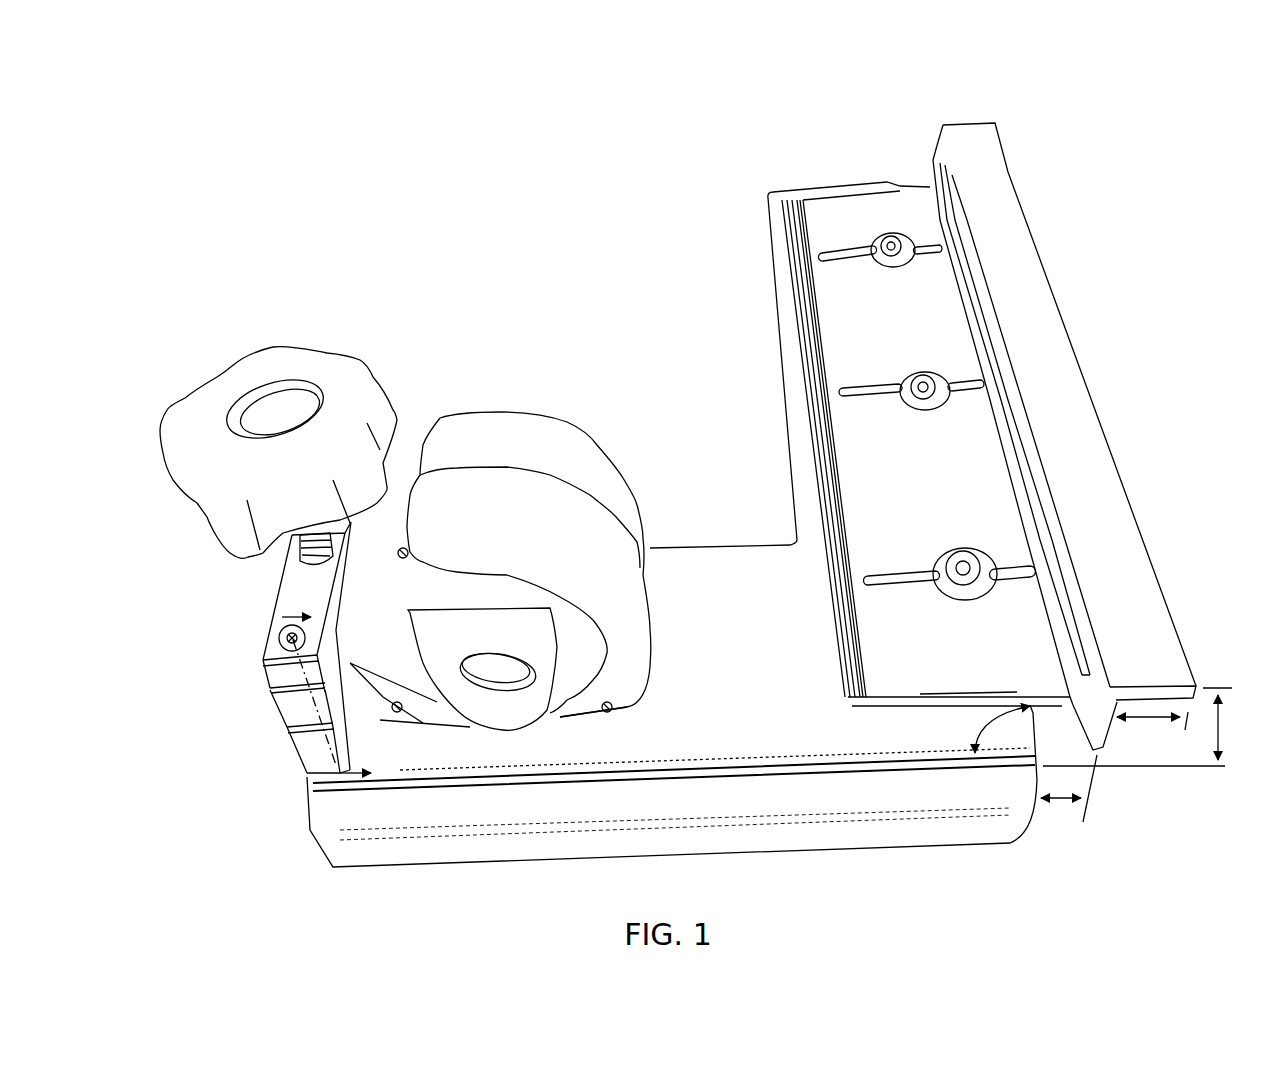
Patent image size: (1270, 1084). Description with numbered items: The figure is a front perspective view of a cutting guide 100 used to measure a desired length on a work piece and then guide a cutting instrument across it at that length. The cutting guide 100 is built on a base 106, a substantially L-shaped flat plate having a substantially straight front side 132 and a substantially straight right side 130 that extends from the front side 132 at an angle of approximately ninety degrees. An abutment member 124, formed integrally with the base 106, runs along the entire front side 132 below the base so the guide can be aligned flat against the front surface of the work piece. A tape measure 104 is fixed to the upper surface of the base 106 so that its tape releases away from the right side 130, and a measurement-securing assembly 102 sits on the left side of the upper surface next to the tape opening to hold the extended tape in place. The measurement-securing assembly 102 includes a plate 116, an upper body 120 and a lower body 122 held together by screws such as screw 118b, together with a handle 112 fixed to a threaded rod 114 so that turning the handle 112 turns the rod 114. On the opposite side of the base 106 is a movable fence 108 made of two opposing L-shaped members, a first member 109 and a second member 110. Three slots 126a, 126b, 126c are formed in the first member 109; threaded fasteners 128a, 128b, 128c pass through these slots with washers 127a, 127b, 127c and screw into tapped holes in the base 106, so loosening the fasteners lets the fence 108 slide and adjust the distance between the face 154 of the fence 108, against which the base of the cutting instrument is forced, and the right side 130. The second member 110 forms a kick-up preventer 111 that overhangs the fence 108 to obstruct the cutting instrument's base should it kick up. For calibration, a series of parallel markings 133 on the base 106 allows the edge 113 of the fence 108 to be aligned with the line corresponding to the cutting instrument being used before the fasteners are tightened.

The cutting guide 100 is at (595, 178).
The measurement-securing assembly 102 is at (285, 303).
The tape measure 104 is at (518, 380).
The base 106 is at (740, 553).
The movable fence 108 is at (876, 130).
The first member 109 is at (853, 188).
The second member 110 is at (1056, 411).
The kick-up preventer 111 is at (1013, 228).
The handle 112 is at (217, 372).
The edge of fence 113 is at (806, 248).
The threaded rod 114 is at (293, 549).
The plate 116 is at (293, 605).
The screw 118b is at (292, 638).
The upper body 120 is at (280, 701).
The lower body 122 is at (300, 748).
The abutment member 124 is at (644, 786).
The slot 126a is at (853, 265).
The washer 127a is at (889, 277).
The threaded fastener 128a is at (910, 255).
The slot 126b is at (878, 400).
The washer 127b is at (916, 415).
The threaded fastener 128b is at (942, 400).
The slot 126c is at (915, 590).
The washer 127c is at (951, 597).
The threaded fastener 128c is at (985, 582).
The right side 130 is at (1035, 739).
The front side 132 is at (778, 762).
The markings 133 is at (792, 318).
The face of fence 154 is at (1109, 739).